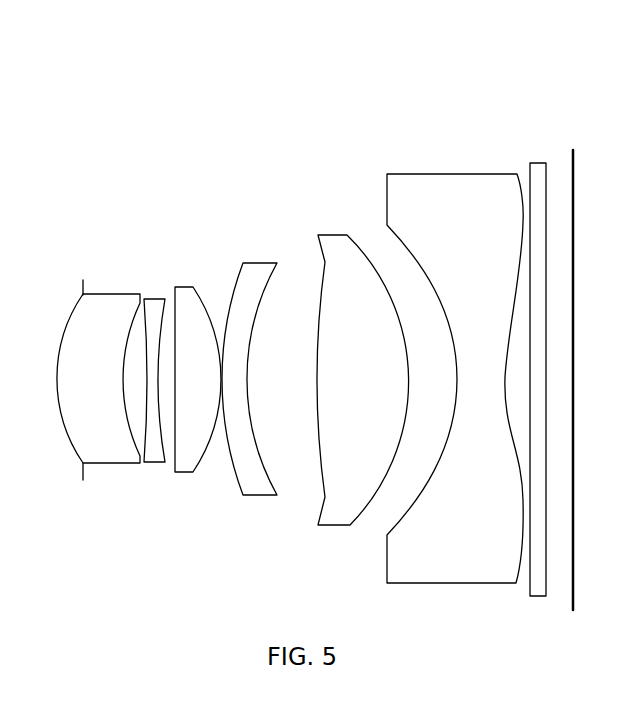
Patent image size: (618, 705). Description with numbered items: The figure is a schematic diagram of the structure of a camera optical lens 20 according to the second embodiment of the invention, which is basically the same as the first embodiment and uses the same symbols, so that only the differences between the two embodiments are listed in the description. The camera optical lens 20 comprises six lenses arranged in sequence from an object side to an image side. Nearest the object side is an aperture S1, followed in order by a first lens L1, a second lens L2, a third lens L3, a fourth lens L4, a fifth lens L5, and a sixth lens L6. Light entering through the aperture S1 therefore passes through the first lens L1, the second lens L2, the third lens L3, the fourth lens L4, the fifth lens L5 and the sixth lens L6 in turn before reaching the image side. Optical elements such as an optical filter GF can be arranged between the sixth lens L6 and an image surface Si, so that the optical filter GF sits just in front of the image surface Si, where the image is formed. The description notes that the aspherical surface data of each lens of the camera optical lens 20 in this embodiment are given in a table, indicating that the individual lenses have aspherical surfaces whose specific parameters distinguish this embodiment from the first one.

The camera optical lens 20 is at (330, 37).
The aperture S1 is at (65, 377).
The first lens L1 is at (98, 363).
The second lens L2 is at (156, 363).
The third lens L3 is at (198, 368).
The fourth lens L4 is at (249, 364).
The fifth lens L5 is at (363, 364).
The sixth lens L6 is at (455, 364).
The optical filter GF is at (533, 366).
The image surface Si is at (572, 362).